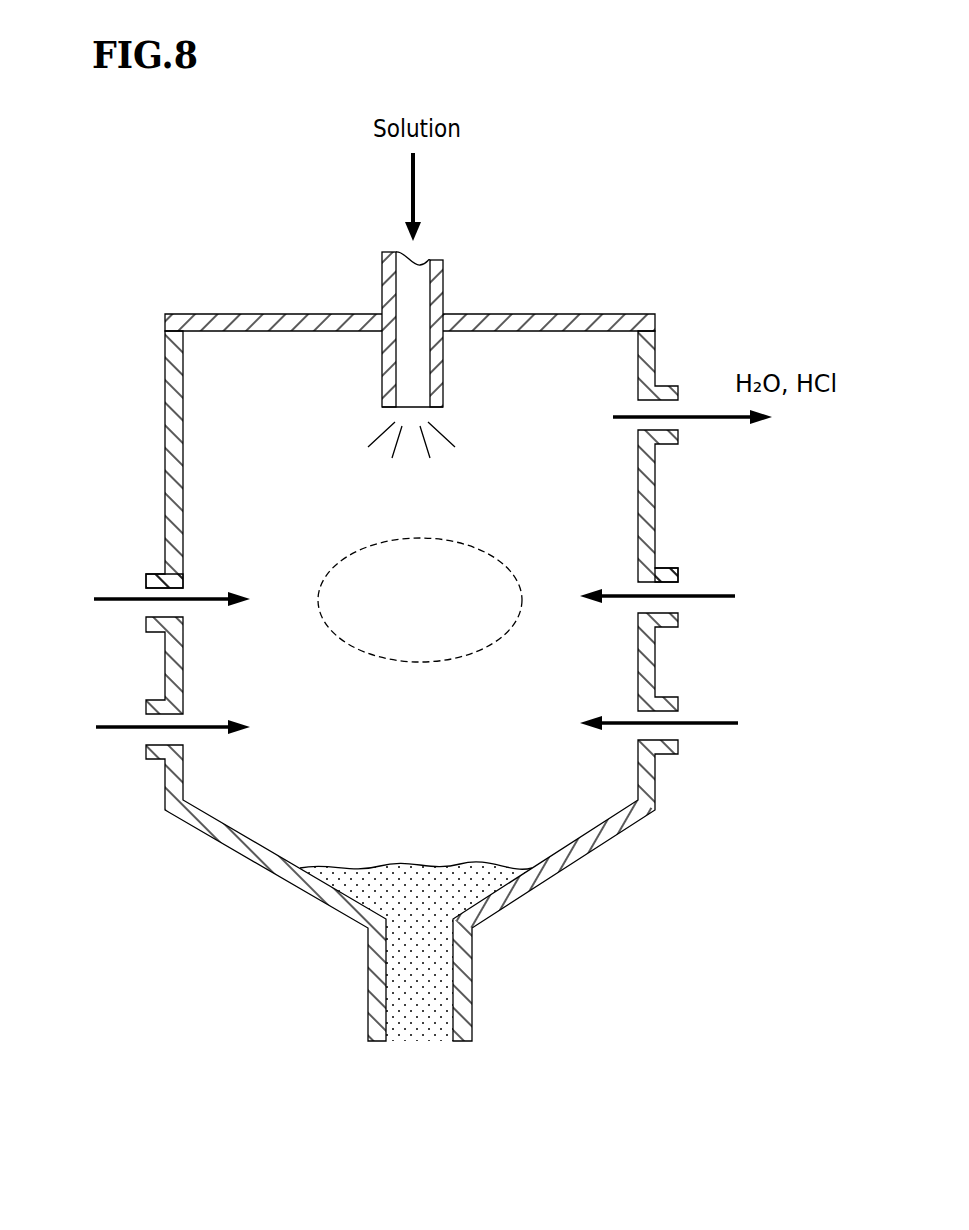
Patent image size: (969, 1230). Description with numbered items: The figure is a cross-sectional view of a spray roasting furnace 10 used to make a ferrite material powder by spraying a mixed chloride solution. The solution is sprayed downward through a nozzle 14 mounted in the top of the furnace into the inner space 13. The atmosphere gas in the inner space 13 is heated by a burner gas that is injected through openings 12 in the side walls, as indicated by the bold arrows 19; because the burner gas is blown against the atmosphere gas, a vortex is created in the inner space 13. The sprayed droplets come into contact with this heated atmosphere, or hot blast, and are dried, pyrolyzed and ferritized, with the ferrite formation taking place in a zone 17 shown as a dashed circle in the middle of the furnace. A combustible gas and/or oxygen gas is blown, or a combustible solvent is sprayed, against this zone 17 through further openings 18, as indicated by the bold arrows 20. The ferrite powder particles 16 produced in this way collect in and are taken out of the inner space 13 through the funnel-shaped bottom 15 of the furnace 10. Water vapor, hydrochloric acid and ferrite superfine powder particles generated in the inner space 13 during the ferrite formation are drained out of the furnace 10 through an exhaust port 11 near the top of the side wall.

The spray roasting furnace 10 is at (609, 181).
The exhaust port 11 is at (670, 447).
The openings 12 is at (160, 702).
The inner space 13 is at (250, 512).
The nozzle 14 is at (445, 368).
The bottom 15 is at (472, 977).
The ferrite powder particles 16 is at (417, 1002).
The zone 17 is at (482, 540).
The openings 18 is at (161, 577).
The bold arrows 19 is at (120, 730).
The bold arrows 20 is at (128, 598).